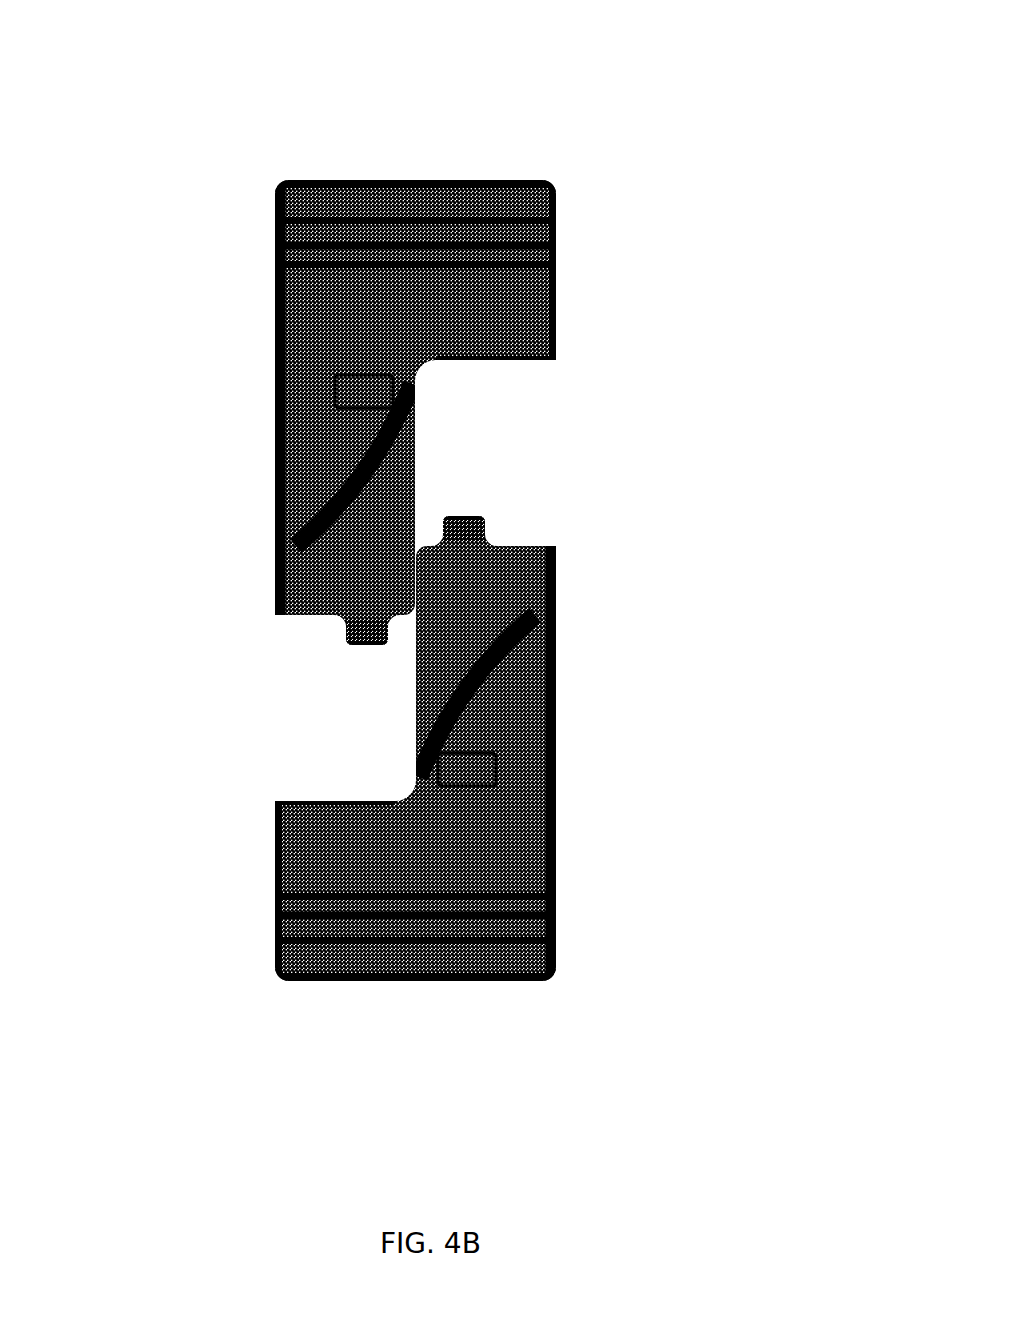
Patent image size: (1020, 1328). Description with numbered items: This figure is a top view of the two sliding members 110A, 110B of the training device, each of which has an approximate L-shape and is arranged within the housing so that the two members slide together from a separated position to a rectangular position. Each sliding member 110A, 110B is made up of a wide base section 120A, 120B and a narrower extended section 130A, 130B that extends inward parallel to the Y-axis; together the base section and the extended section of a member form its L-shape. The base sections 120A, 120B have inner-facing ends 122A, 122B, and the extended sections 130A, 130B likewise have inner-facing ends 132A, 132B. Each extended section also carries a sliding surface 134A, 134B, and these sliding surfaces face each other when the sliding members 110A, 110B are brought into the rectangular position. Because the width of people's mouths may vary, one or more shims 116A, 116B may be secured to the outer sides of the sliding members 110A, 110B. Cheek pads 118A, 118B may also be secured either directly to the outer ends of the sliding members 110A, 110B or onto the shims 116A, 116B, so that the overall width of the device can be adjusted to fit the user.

The sliding member 110A is at (451, 349).
The sliding member 110B is at (400, 773).
The shim 116A is at (273, 232).
The shim 116B is at (543, 915).
The cheek pad 118A is at (375, 174).
The cheek pad 118B is at (498, 967).
The base section 120A is at (558, 253).
The base section 120B is at (253, 795).
The inner-facing end 122A is at (498, 350).
The inner-facing end 122B is at (333, 795).
The extended section 130A is at (257, 355).
The extended section 130B is at (573, 543).
The inner-facing end 132A is at (300, 607).
The inner-facing end 132B is at (498, 535).
The sliding surface 134A is at (407, 455).
The sliding surface 134B is at (408, 732).